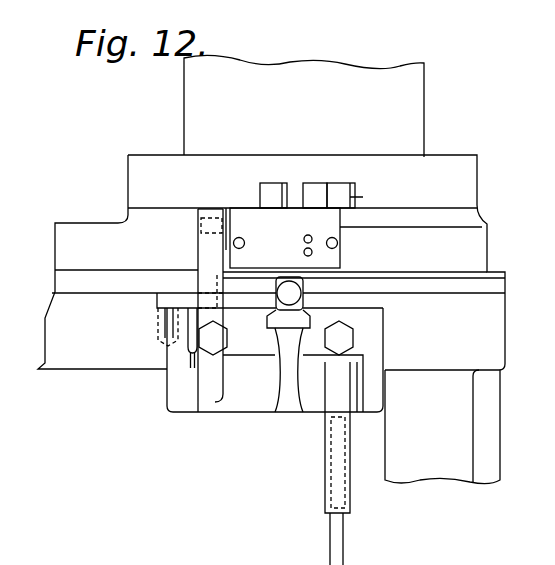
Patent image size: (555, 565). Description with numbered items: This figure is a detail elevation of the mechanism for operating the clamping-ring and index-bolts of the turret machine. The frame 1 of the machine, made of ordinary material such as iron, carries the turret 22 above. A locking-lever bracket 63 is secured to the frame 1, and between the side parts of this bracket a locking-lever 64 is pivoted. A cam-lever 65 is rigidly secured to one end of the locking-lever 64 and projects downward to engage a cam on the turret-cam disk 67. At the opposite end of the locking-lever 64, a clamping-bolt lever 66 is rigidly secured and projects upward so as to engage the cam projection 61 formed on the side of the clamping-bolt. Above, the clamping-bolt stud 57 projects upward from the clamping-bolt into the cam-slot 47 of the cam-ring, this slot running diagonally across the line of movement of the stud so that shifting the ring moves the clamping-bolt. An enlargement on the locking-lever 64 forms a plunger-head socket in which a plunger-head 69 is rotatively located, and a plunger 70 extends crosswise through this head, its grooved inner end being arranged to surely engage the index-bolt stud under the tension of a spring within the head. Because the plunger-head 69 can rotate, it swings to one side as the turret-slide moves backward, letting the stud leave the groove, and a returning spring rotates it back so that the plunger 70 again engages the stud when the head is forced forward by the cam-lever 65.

The frame 1 is at (282, 319).
The turret 22 is at (323, 106).
The cam-slot 47 is at (323, 193).
The clamping-bolt stud 57 is at (297, 193).
The cam projection 61 is at (226, 225).
The locking-lever bracket 63 is at (285, 271).
The locking-lever 64 is at (275, 360).
The cam-lever 65 is at (326, 475).
The clamping-bolt lever 66 is at (203, 251).
The turret-cam disk 67 is at (340, 548).
The plunger-head 69 is at (291, 318).
The plunger 70 is at (290, 293).